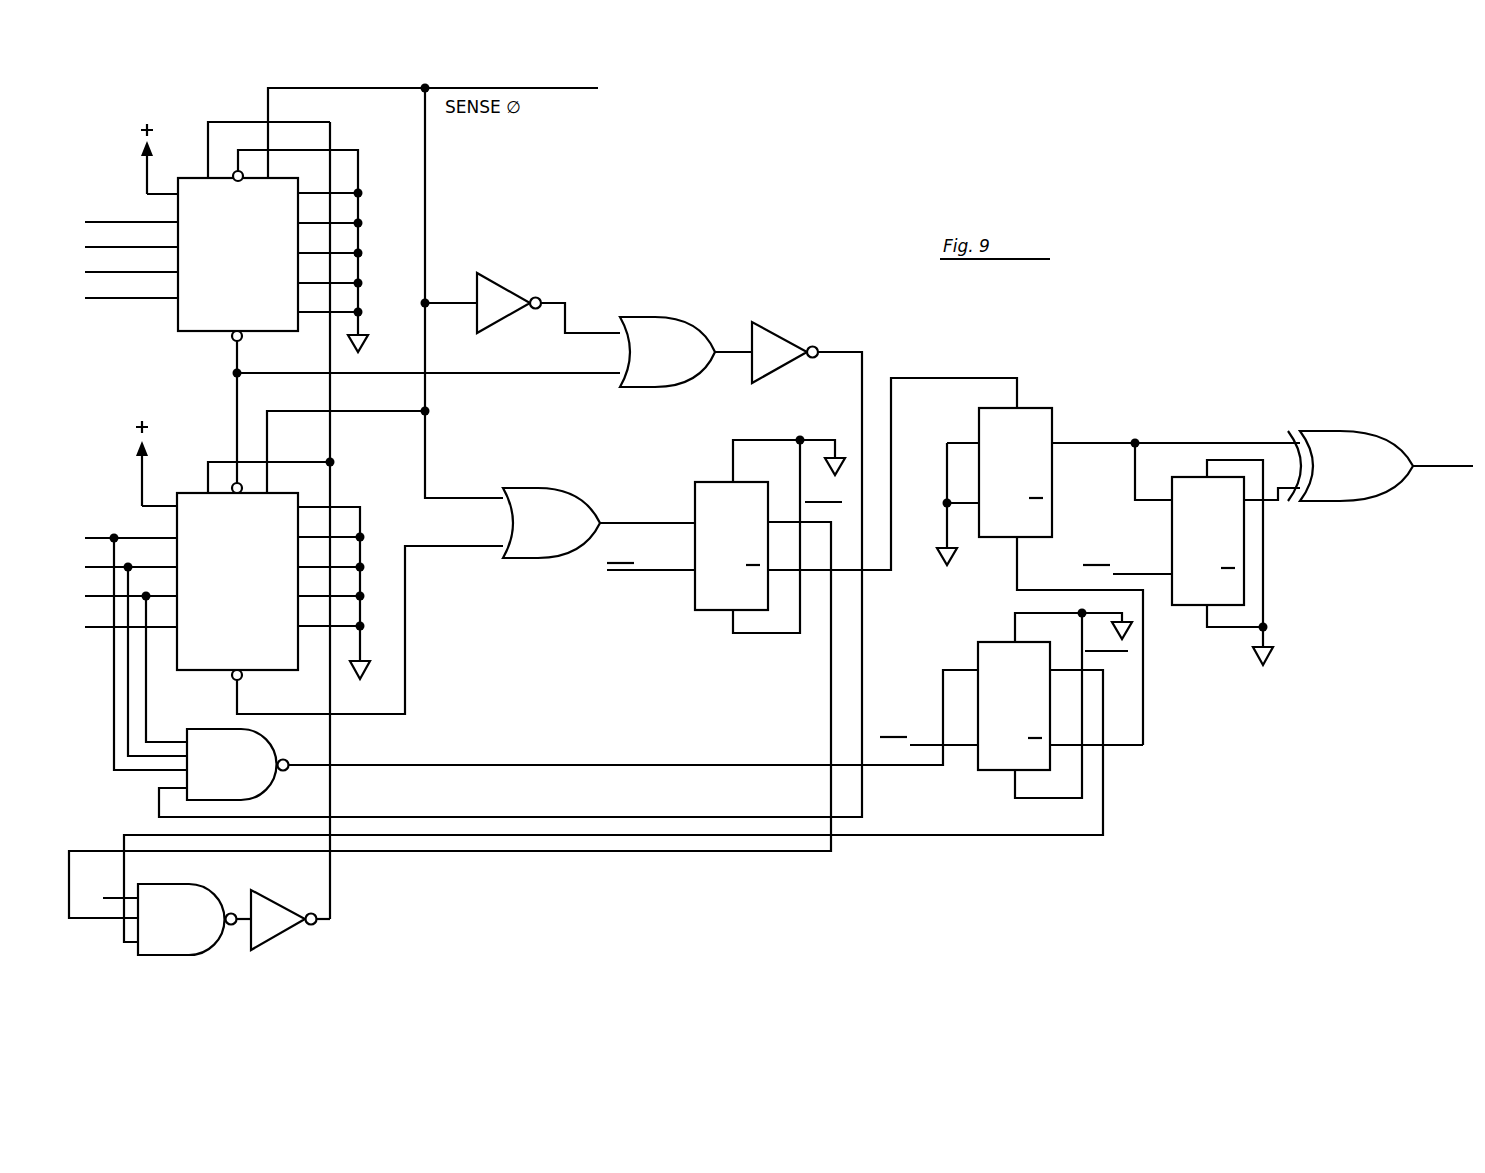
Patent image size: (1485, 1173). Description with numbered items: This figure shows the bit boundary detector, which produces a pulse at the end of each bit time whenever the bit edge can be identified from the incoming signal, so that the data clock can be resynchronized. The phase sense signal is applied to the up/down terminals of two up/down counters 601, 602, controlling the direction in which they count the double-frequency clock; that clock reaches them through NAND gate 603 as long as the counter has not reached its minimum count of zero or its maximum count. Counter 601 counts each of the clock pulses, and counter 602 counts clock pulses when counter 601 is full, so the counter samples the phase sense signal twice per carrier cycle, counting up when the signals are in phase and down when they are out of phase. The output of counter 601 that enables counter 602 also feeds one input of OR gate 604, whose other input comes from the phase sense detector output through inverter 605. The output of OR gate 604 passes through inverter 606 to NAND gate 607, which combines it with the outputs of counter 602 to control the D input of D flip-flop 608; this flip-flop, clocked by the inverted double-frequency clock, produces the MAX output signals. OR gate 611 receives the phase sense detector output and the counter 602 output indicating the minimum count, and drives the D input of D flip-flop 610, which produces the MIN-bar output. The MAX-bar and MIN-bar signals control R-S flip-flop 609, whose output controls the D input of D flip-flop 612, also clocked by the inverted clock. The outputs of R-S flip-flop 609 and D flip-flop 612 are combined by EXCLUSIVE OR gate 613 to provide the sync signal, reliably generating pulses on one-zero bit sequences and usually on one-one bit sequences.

The counter 601 is at (351, 285).
The counter 602 is at (284, 561).
The NAND gate 603 is at (201, 937).
The OR gate 604 is at (686, 335).
The inverter 605 is at (522, 298).
The inverter 606 is at (510, 564).
The NAND gate 607 is at (286, 764).
The D flip-flop 608 is at (635, 776).
The R-S flip-flop 609 is at (1118, 572).
The D flip-flop 610 is at (543, 637).
The OR gate 611 is at (599, 510).
The D flip-flop 612 is at (1191, 535).
The EXCLUSIVE OR gate 613 is at (1380, 445).